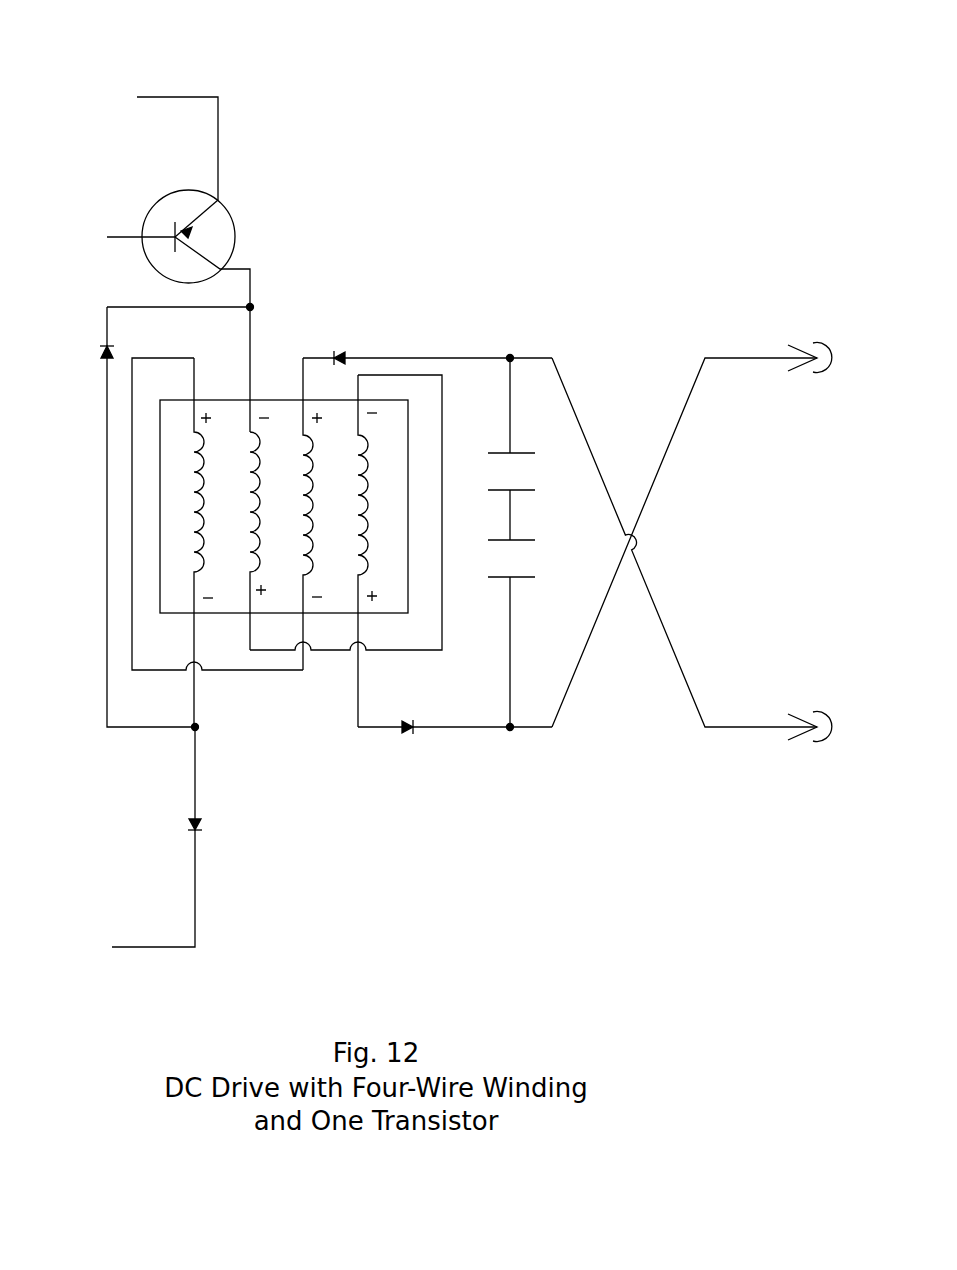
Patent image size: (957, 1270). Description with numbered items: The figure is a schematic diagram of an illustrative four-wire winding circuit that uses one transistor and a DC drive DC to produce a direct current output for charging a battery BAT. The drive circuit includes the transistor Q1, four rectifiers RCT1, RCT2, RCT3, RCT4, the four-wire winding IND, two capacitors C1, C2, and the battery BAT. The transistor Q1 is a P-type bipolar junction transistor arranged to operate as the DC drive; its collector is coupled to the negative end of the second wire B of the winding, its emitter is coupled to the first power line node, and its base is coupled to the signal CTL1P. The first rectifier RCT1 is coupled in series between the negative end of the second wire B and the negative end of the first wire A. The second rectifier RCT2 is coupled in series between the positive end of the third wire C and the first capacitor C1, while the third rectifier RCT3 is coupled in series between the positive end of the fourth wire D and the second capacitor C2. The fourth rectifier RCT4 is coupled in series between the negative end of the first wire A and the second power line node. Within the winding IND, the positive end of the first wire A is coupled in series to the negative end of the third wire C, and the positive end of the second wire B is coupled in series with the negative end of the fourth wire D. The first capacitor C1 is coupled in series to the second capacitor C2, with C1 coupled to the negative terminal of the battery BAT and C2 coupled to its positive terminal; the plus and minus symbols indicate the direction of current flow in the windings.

The direct current drive DC is at (153, 493).
The transistor Q1 is at (206, 248).
The control signal CTL1P is at (104, 237).
The first rectifier RCT1 is at (115, 517).
The second rectifier RCT2 is at (427, 345).
The third rectifier RCT3 is at (455, 744).
The fourth rectifier RCT4 is at (162, 781).
The four-wire winding IND is at (284, 542).
The first wire of the four-wire winding A is at (193, 542).
The second wire of the four-wire winding B is at (248, 534).
The third wire of the four-wire winding C is at (303, 514).
The fourth wire of the four-wire winding D is at (358, 551).
The first capacitor C1 is at (496, 449).
The second capacitor C2 is at (496, 633).
The battery BAT is at (709, 542).